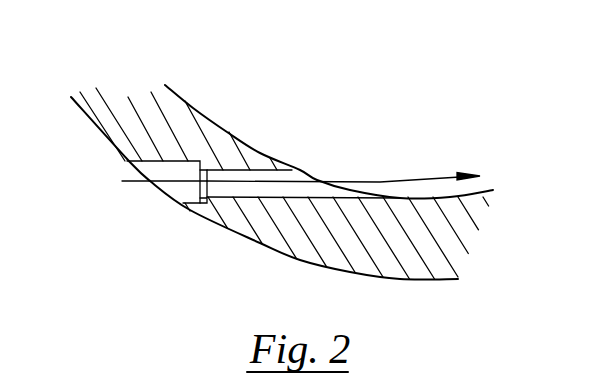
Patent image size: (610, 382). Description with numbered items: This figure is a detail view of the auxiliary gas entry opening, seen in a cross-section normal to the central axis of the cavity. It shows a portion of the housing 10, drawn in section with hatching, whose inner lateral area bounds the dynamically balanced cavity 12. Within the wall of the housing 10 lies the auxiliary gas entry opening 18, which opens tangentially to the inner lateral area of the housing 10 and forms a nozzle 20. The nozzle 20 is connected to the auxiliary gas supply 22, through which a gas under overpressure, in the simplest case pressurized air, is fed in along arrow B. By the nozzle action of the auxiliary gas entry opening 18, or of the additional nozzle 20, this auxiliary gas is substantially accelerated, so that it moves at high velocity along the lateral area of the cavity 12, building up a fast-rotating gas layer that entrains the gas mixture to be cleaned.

The housing 10 is at (395, 250).
The cavity 12 is at (495, 157).
The auxiliary gas entry opening 18 is at (298, 168).
The nozzle 20 is at (207, 204).
The auxiliary gas supply 22 is at (172, 190).
The arrow B is at (131, 183).